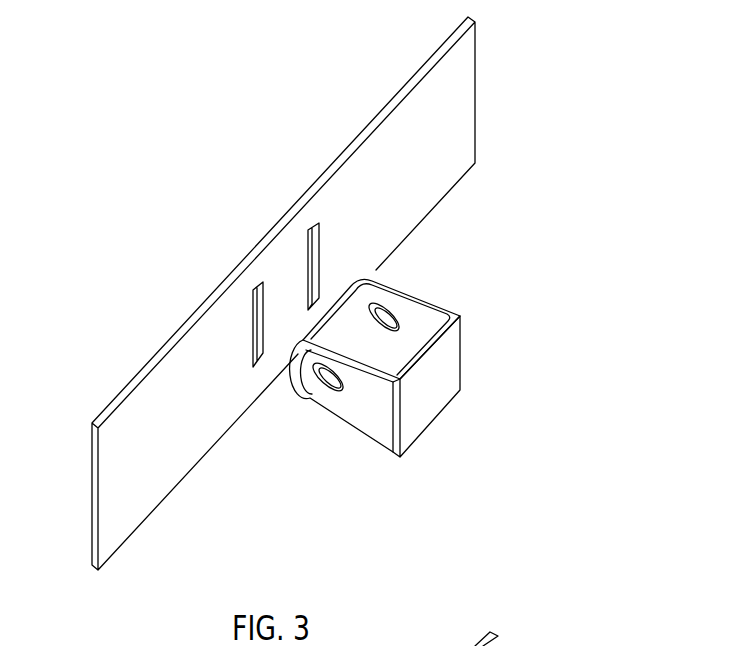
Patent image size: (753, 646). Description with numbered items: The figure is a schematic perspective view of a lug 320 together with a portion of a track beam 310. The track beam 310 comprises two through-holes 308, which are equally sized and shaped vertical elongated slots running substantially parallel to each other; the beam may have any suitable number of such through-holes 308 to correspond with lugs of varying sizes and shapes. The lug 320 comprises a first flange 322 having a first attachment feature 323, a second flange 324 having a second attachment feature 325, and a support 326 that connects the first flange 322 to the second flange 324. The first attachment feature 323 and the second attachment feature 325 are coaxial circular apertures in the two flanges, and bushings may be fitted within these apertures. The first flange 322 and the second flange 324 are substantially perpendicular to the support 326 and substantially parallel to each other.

The through-holes 308 is at (263, 282).
The track beam 310 is at (140, 367).
The lug 320 is at (427, 362).
The first flange 322 is at (368, 432).
The first attachment feature 323 is at (314, 400).
The second flange 324 is at (421, 302).
The second attachment feature 325 is at (383, 305).
The support 326 is at (437, 418).